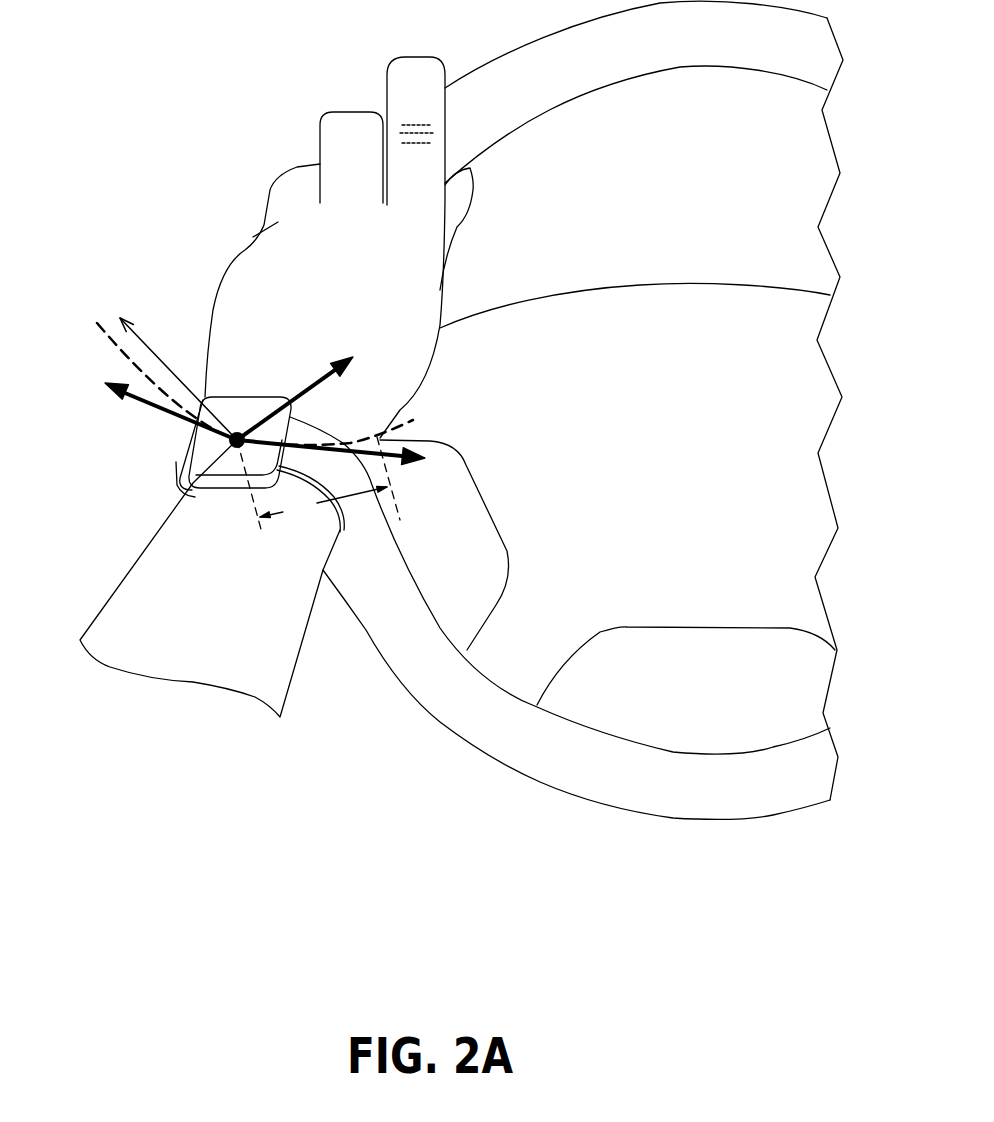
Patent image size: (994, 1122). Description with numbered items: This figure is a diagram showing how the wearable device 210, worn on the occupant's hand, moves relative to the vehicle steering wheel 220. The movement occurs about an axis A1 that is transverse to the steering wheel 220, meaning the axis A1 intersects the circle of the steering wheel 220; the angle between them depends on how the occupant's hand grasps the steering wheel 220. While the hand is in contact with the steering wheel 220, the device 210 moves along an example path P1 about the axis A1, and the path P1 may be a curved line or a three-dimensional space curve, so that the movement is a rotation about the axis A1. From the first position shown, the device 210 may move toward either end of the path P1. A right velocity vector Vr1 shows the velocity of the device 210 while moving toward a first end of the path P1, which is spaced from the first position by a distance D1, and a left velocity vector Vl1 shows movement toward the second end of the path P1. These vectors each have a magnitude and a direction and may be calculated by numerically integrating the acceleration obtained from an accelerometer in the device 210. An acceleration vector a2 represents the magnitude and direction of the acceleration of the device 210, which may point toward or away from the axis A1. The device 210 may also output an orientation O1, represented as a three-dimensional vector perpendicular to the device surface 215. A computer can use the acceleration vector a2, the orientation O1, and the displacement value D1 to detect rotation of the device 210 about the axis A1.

The axis A1 is at (280, 340).
The orientation O1 is at (168, 366).
The path P1 is at (110, 350).
The left velocity vector Vl1 is at (155, 403).
The acceleration vector a2 is at (302, 387).
The right velocity vector Vr1 is at (348, 463).
The device surface 215 is at (246, 427).
The wearable device 210 is at (176, 497).
The distance D1 is at (318, 485).
The steering wheel 220 is at (426, 709).